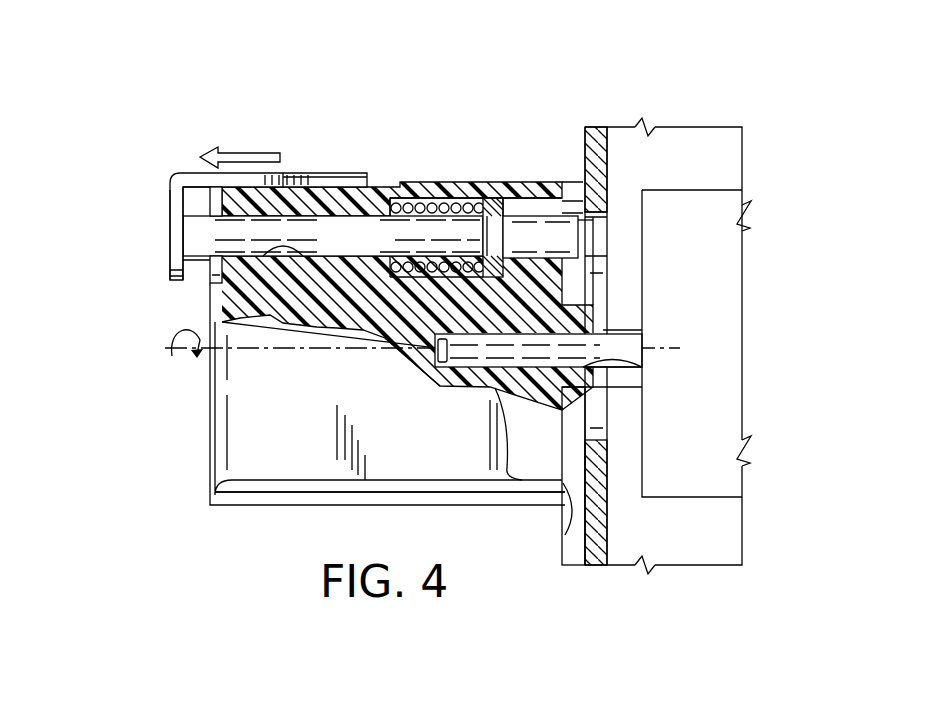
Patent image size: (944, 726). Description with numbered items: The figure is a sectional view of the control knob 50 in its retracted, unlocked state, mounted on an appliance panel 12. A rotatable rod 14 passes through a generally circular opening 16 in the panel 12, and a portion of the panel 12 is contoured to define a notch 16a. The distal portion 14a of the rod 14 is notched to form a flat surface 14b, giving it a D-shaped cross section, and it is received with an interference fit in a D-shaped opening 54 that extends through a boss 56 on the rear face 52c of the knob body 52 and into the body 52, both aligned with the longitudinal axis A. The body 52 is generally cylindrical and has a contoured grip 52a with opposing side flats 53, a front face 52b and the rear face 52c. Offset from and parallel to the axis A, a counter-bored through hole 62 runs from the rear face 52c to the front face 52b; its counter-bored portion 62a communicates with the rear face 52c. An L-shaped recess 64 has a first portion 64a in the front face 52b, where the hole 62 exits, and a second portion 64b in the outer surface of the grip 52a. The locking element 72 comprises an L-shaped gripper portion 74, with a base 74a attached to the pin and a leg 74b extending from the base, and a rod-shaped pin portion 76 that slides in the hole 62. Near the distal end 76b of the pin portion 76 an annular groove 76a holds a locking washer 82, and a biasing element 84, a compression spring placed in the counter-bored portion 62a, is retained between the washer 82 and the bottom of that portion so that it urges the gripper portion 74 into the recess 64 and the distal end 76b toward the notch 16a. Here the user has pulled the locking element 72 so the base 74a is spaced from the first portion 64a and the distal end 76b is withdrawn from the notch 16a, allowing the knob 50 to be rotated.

The panel 12 is at (583, 145).
The rotatable rod 14 is at (623, 324).
The distal portion of the rod 14a is at (497, 283).
The flat surface 14b is at (437, 331).
The opening 16 is at (600, 436).
The notch 16a is at (603, 212).
The control knob 50 is at (183, 468).
The body 52 is at (243, 507).
The grip 52a is at (406, 453).
The front face 52b is at (210, 407).
The rear face 52c is at (565, 535).
The side flats 53 is at (310, 433).
The opening 54 is at (600, 362).
The boss 56 is at (593, 388).
The counter-bored through hole 62 is at (285, 258).
The counter-bored portion 62a is at (562, 203).
The L-shaped recess 64 is at (210, 281).
The first portion of the recess 64a is at (210, 207).
The second portion of the recess 64b is at (381, 185).
The locking element 72 is at (333, 170).
The gripper portion 74 is at (167, 191).
The base 74a is at (170, 241).
The leg 74b is at (313, 180).
The pin portion 76 is at (513, 200).
The annular groove 76a is at (495, 258).
The distal end of the pin portion 76b is at (578, 238).
The locking washer 82 is at (490, 203).
The biasing element 84 is at (437, 203).
The longitudinal axis A is at (285, 350).